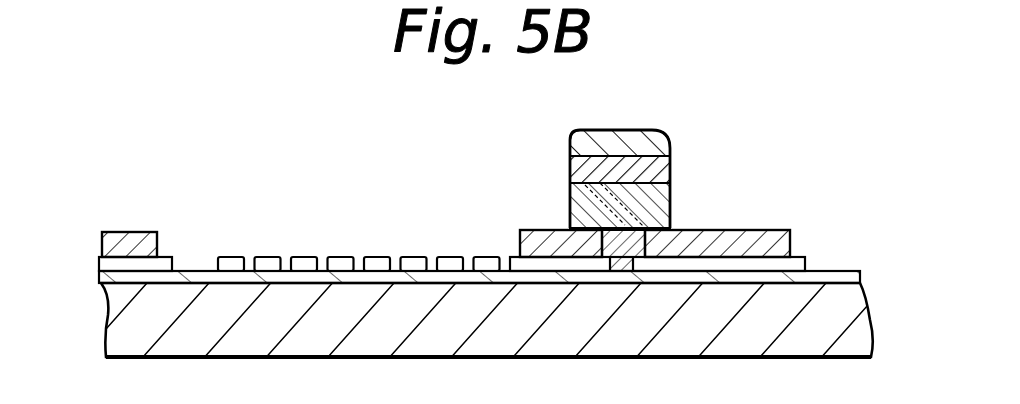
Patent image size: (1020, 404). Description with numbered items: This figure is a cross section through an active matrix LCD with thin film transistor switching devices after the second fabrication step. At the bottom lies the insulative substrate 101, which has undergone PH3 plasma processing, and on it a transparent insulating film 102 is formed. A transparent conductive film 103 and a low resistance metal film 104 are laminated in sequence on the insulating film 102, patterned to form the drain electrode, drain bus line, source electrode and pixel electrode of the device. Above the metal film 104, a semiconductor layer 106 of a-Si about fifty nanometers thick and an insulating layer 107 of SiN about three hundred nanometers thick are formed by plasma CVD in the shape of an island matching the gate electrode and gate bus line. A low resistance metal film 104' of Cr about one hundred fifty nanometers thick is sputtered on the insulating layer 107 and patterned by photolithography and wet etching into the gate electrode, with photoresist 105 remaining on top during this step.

The insulative substrate 101 is at (745, 330).
The transparent insulating film 102 is at (822, 278).
The transparent conductive film 103 is at (793, 262).
The low resistance metal film 104 is at (489, 221).
The low resistance metal film 104' is at (664, 152).
The photoresist 105 is at (570, 147).
The semiconductor layer 106 is at (670, 211).
The insulating layer 107 is at (587, 198).